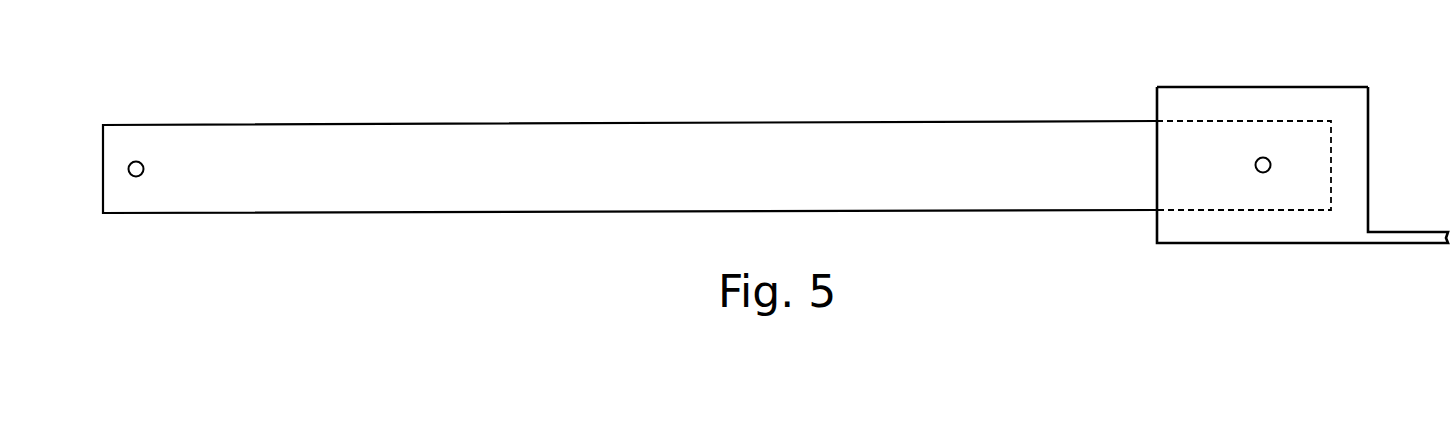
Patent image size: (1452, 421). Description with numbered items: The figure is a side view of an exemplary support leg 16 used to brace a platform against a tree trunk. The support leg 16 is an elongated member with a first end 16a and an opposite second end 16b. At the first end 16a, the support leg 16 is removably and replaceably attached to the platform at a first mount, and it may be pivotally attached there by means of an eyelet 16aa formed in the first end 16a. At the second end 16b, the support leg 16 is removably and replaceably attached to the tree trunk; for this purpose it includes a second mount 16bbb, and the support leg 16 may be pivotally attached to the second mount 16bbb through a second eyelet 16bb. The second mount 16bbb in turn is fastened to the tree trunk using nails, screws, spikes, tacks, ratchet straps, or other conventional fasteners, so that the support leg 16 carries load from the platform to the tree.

The support leg 16 is at (748, 84).
The first end 16a is at (138, 214).
The eyelet 16aa is at (138, 162).
The second end 16b is at (1236, 244).
The eyelet 16bb is at (1265, 157).
The second mount 16bbb is at (1246, 64).